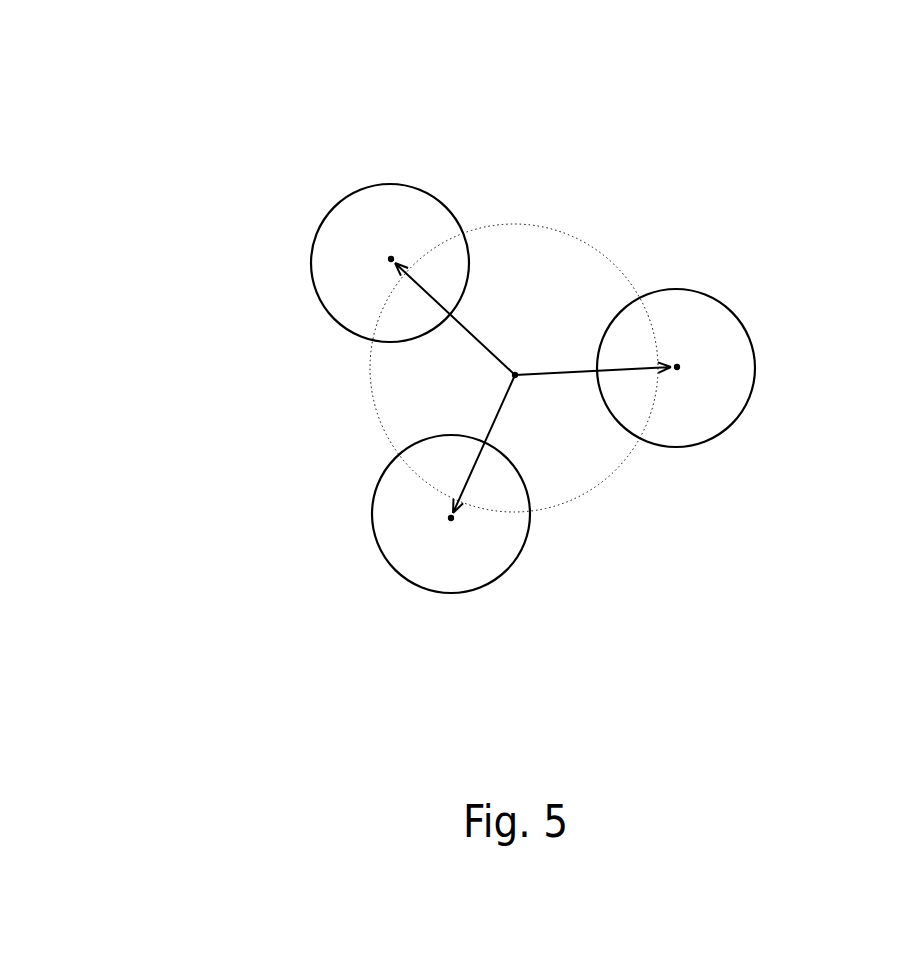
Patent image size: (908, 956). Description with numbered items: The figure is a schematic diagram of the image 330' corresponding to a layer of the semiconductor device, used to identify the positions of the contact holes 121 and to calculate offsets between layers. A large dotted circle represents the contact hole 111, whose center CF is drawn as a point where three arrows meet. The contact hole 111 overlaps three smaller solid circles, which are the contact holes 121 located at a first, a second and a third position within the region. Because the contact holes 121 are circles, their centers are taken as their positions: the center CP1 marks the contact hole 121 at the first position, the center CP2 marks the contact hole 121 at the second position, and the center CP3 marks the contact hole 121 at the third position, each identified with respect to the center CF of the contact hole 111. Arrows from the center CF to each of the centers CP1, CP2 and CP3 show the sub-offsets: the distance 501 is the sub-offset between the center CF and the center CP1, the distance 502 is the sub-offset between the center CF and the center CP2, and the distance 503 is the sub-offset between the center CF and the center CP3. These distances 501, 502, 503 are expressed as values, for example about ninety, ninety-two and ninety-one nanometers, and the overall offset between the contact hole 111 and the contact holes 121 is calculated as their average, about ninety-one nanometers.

The image 330' is at (181, 34).
The contact hole 111 is at (593, 247).
The contact hole 121 is at (311, 262).
The center CP1 is at (391, 259).
The center CP2 is at (677, 367).
The center CP3 is at (451, 518).
The center CF is at (515, 375).
The distance 501 is at (472, 337).
The distance 502 is at (552, 370).
The distance 503 is at (502, 410).